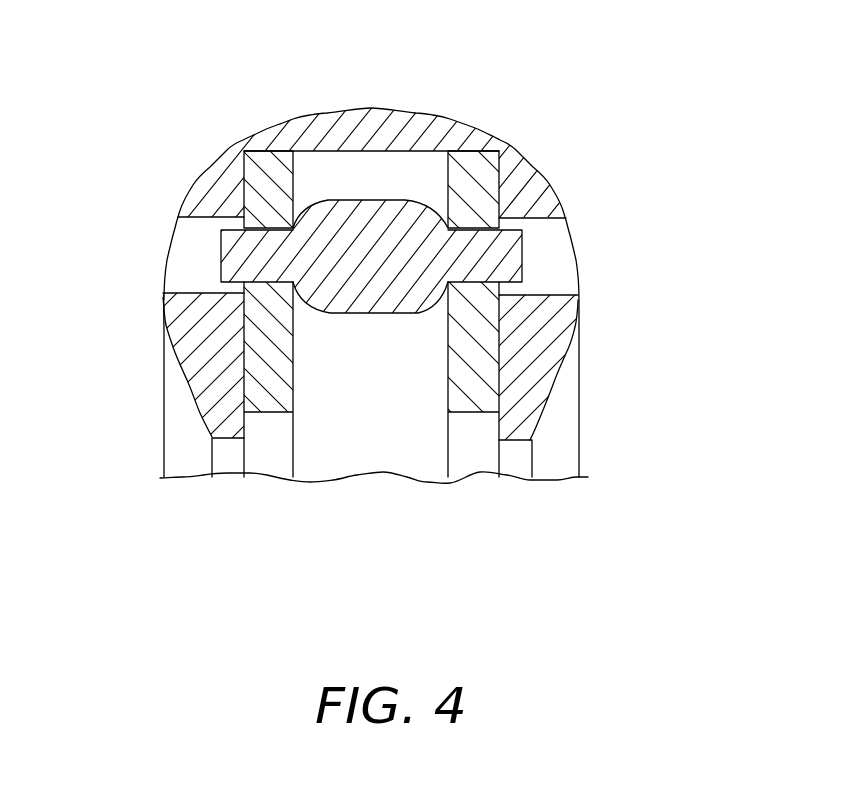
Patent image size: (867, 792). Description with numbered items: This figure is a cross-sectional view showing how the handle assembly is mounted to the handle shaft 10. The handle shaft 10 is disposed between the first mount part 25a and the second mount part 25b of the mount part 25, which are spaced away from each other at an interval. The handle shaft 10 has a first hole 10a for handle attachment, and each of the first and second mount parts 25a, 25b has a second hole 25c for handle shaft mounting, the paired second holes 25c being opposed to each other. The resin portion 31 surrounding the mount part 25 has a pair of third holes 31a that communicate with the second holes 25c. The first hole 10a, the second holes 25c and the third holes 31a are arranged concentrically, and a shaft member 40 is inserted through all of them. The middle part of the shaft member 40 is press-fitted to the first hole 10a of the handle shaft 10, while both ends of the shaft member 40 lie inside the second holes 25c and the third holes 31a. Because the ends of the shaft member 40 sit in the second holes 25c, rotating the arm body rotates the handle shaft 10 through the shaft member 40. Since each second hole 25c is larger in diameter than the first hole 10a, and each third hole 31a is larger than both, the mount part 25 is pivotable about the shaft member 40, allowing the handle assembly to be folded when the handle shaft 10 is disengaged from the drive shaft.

The handle shaft 10 is at (389, 185).
The first hole 10a is at (326, 252).
The mount part 25 is at (461, 421).
The first mount part 25a is at (272, 176).
The second mount part 25b is at (472, 168).
The second hole 25c is at (270, 231).
The resin portion 31 is at (542, 160).
The third hole 31a is at (193, 292).
The shaft member 40 is at (397, 264).